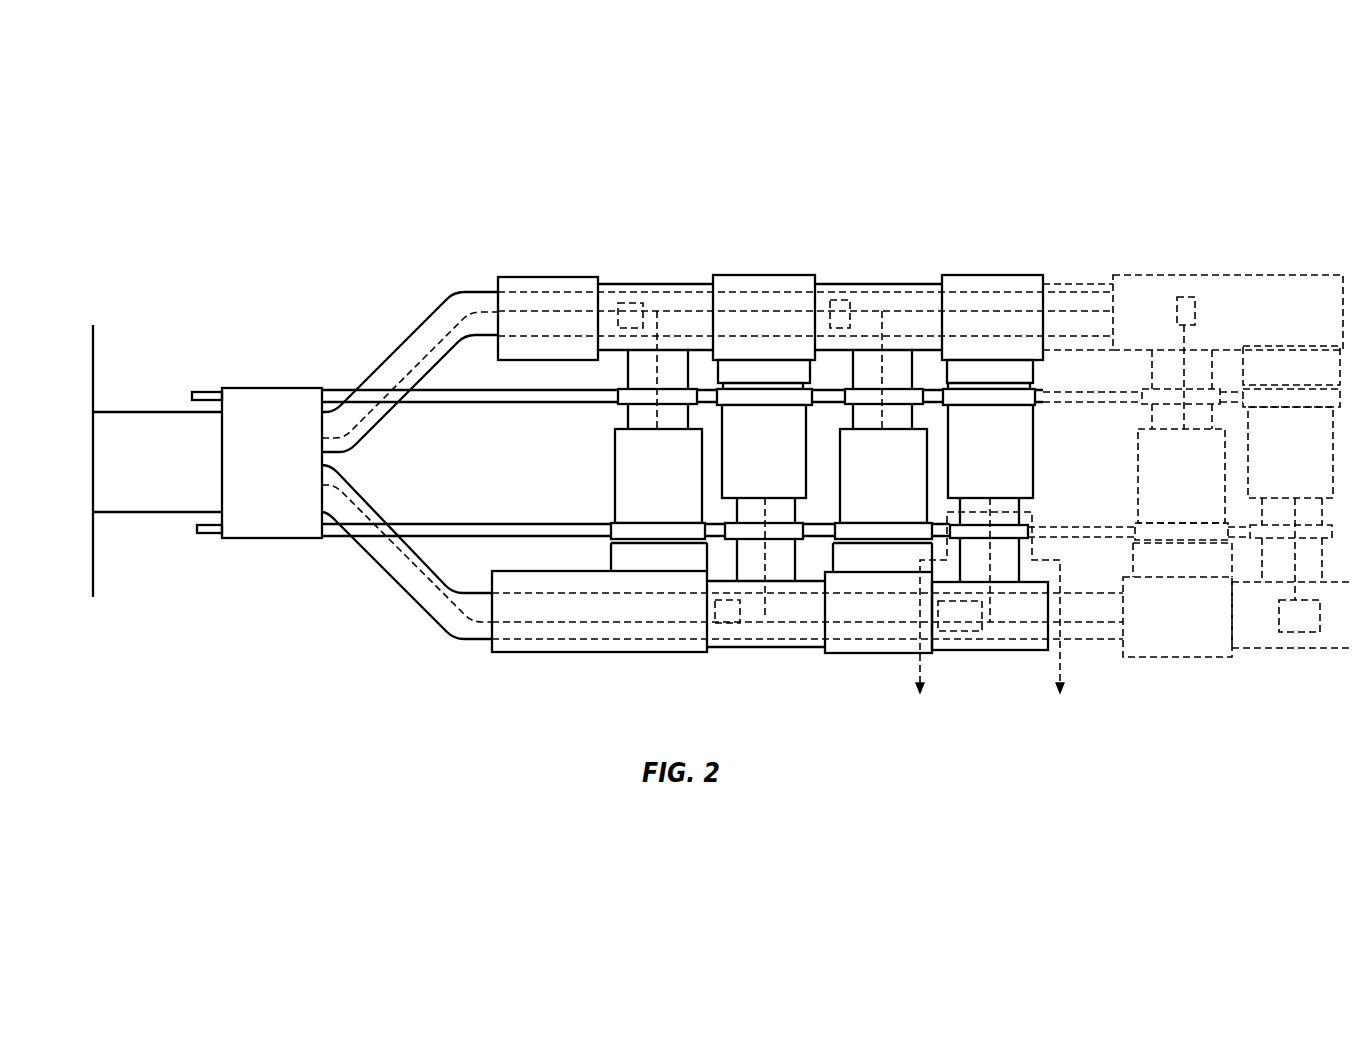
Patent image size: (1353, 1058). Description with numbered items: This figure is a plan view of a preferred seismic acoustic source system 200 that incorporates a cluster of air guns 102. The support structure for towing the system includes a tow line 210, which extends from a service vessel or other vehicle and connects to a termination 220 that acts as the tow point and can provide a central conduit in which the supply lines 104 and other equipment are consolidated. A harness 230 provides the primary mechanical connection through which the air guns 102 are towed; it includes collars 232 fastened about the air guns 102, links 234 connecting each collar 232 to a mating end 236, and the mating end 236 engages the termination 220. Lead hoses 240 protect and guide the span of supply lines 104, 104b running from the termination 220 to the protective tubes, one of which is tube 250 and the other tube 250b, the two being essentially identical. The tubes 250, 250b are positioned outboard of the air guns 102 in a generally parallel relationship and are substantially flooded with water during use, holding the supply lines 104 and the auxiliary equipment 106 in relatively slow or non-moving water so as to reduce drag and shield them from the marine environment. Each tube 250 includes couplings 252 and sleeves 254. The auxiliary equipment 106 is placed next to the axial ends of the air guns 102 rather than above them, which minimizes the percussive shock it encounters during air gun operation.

The acoustic source system 200 is at (723, 444).
The tow line 210 is at (102, 422).
The termination 220 is at (235, 398).
The harness 230 is at (786, 446).
The collars 232 is at (643, 527).
The links 234 is at (512, 395).
The mating end 236 is at (205, 392).
The lead hoses 240 is at (380, 345).
The protective tube 250 is at (803, 248).
The protective tube 250b is at (425, 649).
The couplings 252 is at (702, 284).
The sleeves 254 is at (573, 277).
The air guns 102 is at (682, 494).
The supply lines 104 is at (446, 310).
The supply line 104b is at (411, 578).
The auxiliary equipment 106 is at (622, 303).